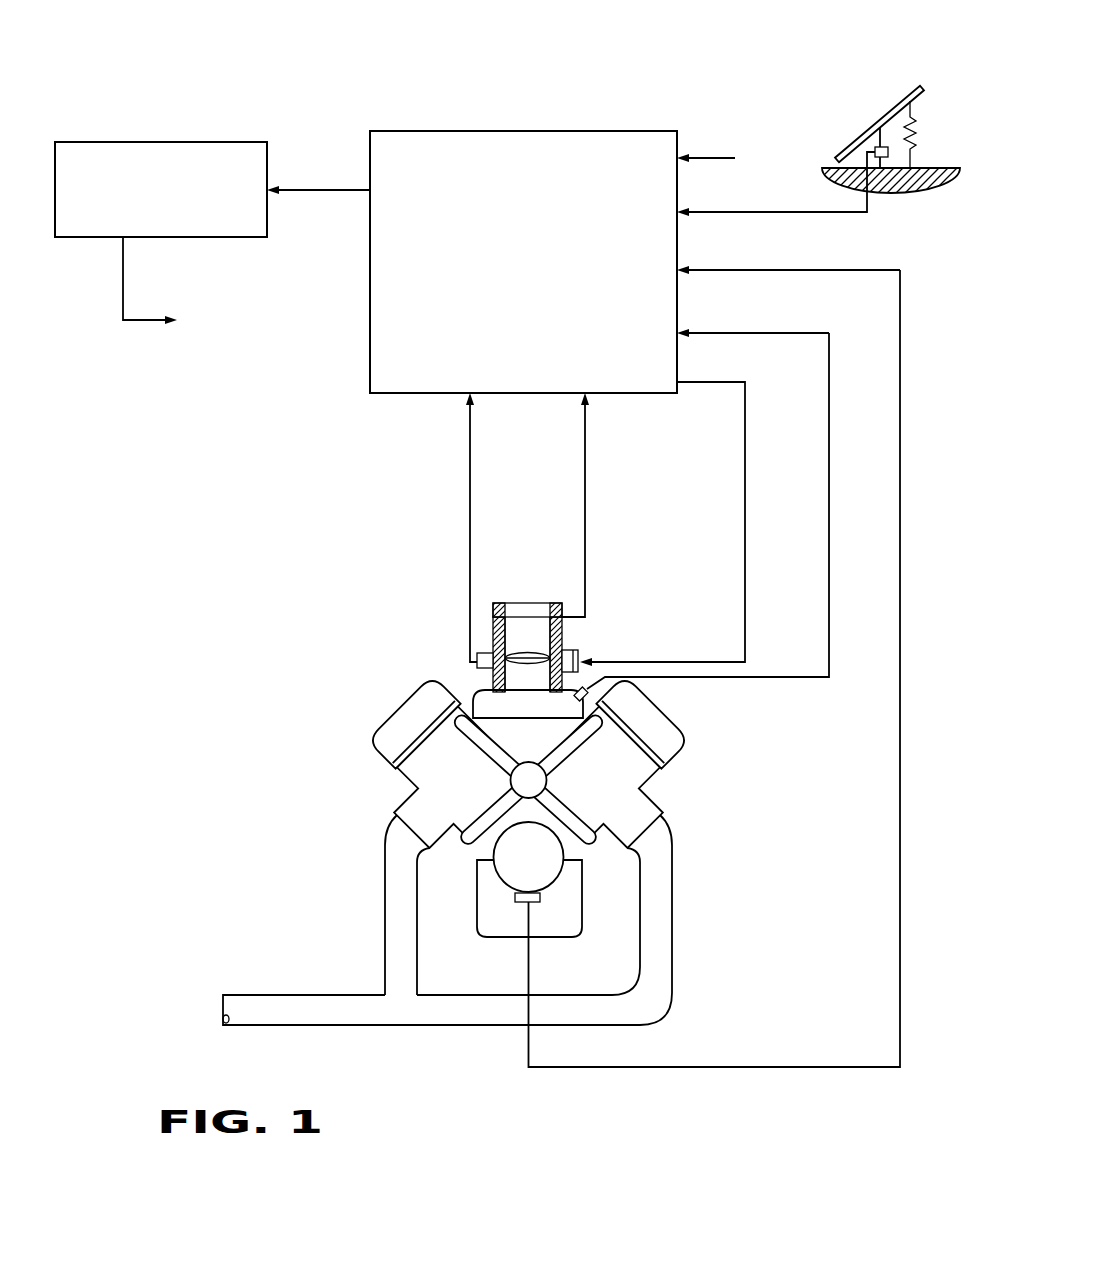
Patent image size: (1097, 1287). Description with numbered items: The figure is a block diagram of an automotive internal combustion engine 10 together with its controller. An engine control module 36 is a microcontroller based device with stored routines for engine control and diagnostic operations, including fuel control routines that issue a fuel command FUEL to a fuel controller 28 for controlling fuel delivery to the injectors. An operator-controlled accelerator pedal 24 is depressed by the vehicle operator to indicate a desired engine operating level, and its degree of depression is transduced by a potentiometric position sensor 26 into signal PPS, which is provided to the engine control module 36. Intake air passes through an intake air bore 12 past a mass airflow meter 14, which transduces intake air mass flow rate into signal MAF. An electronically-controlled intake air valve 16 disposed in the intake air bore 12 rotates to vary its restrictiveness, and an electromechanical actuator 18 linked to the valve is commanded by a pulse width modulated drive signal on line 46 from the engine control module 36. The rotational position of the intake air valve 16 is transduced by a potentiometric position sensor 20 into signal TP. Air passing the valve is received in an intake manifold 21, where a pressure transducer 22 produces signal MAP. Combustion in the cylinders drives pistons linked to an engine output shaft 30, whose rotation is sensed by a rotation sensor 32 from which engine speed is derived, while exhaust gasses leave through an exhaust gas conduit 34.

The engine 10 is at (475, 862).
The intake air bore 12 is at (492, 603).
The mass airflow meter 14 is at (544, 607).
The intake air valve 16 is at (530, 650).
The electromechanical actuator 18 is at (572, 650).
The potentiometric position sensor 20 is at (487, 653).
The intake manifold 21 is at (483, 708).
The pressure transducer 22 is at (590, 692).
The accelerator pedal 24 is at (900, 100).
The potentiometric position sensor 26 is at (872, 147).
The fuel controller 28 is at (162, 142).
The engine output shaft 30 is at (517, 867).
The rotation sensor 32 is at (520, 903).
The exhaust gas conduit 34 is at (403, 975).
The engine control module 36 is at (528, 131).
The line 46 is at (713, 381).